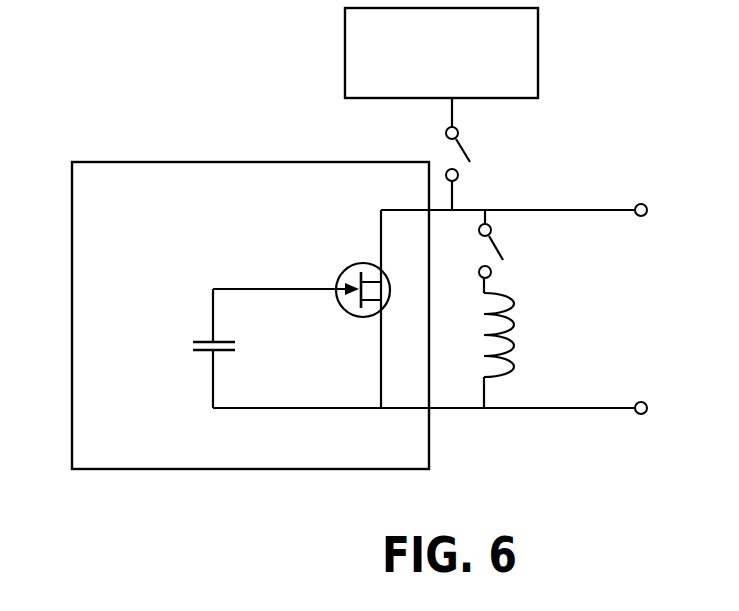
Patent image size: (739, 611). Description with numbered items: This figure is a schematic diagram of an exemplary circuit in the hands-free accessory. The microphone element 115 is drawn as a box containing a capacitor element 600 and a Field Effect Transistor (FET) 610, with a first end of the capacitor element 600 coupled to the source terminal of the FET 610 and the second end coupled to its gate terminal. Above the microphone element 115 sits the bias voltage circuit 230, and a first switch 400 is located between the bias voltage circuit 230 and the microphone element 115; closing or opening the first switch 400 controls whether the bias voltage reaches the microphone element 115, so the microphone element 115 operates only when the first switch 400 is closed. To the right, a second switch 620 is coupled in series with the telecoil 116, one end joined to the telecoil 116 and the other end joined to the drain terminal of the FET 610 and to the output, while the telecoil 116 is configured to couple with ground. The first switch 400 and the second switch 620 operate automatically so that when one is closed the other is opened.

The microphone element 115 is at (193, 162).
The telecoil 116 is at (512, 330).
The bias voltage circuit 230 is at (441, 53).
The first switch 400 is at (463, 152).
The capacitor element 600 is at (193, 340).
The Field Effect Transistor (FET) 610 is at (349, 265).
The second switch 620 is at (497, 250).